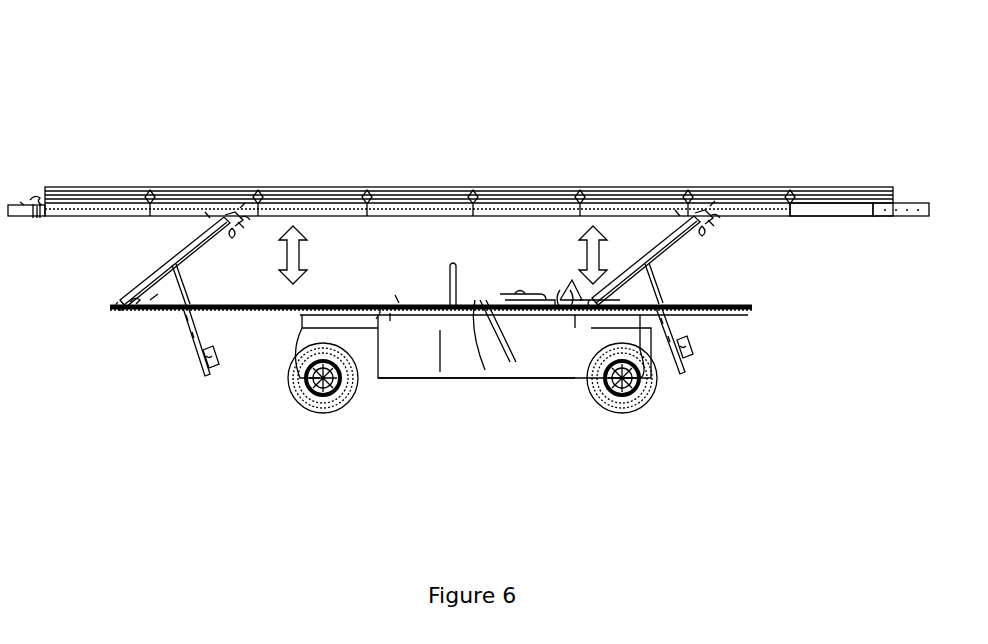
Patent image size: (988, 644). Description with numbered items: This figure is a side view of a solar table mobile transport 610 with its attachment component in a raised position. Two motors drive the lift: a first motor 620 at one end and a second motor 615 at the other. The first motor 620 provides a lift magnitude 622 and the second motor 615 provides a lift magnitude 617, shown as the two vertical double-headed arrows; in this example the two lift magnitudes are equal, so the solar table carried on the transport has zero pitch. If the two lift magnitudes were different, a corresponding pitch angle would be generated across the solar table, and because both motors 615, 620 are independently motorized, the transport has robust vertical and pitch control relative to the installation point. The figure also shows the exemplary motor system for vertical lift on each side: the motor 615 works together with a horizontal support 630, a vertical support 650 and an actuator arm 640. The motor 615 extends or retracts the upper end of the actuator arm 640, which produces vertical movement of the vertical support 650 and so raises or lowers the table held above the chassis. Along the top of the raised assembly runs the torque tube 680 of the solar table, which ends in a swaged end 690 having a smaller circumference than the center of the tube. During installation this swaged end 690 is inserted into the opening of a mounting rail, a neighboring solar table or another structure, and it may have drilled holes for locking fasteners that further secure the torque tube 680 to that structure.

The vehicle with conveyor system 610 is at (88, 50).
The second motor 615 is at (200, 351).
The lift magnitude 617 is at (314, 240).
The first motor 620 is at (688, 360).
The lift magnitude 622 is at (574, 240).
The horizontal support 630 is at (150, 309).
The actuator arm 640 is at (179, 296).
The vertical support 650 is at (140, 274).
The torque tube 680 is at (805, 218).
The swaged end 690 is at (899, 216).